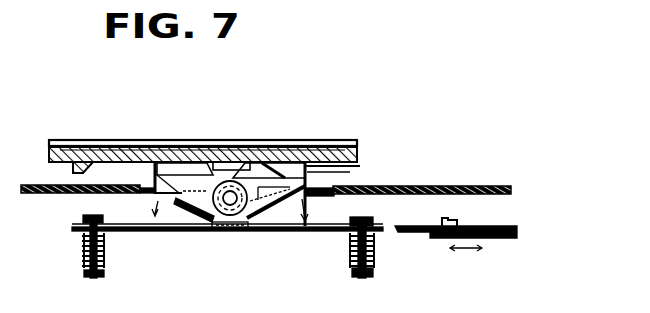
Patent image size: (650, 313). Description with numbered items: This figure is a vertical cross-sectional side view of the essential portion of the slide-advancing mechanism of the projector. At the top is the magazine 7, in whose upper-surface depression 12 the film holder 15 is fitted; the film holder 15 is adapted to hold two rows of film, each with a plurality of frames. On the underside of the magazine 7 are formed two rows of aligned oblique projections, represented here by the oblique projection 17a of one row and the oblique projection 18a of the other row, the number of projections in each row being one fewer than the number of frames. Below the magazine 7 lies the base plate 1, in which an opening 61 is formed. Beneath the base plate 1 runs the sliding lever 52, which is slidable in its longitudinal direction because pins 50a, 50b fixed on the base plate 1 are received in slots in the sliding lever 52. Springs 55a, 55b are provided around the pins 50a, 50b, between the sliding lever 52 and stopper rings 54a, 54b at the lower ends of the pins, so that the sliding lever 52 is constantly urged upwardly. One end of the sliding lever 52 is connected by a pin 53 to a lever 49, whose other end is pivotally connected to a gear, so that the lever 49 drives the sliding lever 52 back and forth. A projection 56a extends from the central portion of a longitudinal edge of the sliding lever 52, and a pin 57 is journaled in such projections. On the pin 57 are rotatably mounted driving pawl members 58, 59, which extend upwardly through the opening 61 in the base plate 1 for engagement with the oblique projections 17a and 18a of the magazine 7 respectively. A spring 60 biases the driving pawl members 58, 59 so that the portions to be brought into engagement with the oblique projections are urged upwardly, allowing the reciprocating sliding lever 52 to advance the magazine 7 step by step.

The base plate 1 is at (485, 187).
The magazine 7 is at (358, 154).
The depression 12 is at (346, 141).
The film holder 15 is at (89, 151).
The oblique projection 17a is at (315, 168).
The oblique projection 18a is at (74, 168).
The lever 49 is at (504, 238).
The pin 50a is at (94, 278).
The pin 50b is at (361, 277).
The sliding lever 52 is at (313, 231).
The pin 53 is at (458, 221).
The stopper ring 54a is at (88, 268).
The stopper ring 54b is at (375, 264).
The spring 55a is at (105, 250).
The spring 55b is at (375, 248).
The projection 56a is at (217, 224).
The pin 57 is at (234, 210).
The driving pawl member 58 is at (310, 163).
The driving pawl member 59 is at (156, 163).
The spring 60 is at (257, 166).
The opening 61 is at (136, 192).